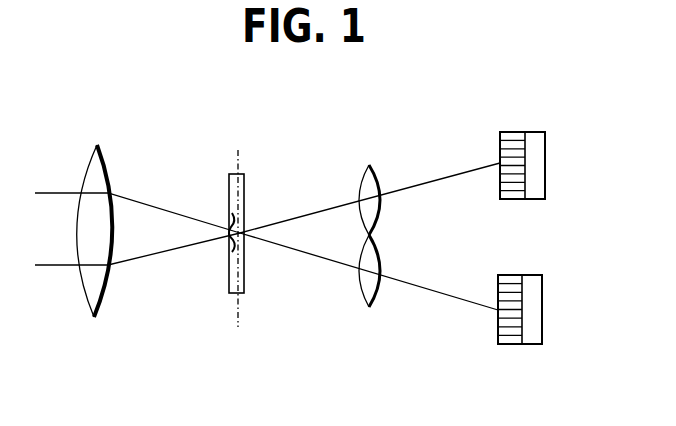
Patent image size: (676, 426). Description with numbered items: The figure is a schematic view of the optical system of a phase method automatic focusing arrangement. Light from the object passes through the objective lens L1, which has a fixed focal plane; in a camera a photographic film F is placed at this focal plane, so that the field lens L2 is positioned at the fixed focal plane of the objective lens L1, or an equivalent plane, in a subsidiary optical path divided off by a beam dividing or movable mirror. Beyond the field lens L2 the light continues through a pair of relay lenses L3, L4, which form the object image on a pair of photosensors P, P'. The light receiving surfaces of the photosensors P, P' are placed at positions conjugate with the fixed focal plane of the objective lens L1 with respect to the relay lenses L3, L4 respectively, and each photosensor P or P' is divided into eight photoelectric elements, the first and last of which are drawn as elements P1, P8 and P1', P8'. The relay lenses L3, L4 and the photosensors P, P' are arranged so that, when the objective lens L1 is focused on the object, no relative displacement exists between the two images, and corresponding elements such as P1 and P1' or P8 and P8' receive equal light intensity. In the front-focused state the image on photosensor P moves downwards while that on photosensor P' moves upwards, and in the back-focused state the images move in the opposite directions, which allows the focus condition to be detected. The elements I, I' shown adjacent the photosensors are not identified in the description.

The objective lens L1 is at (97, 145).
The field lens L2 is at (233, 173).
The photographic film F is at (237, 315).
The relay lens L3 is at (369, 165).
The relay lens L4 is at (369, 307).
The photosensor P is at (510, 132).
The photodetector substrate I is at (522, 132).
The photoelectric element P1 is at (486, 137).
The photoelectric element P8 is at (486, 182).
The photosensor P' is at (508, 337).
The second photodetector substrate I' is at (522, 337).
The photoelectric element P1' is at (484, 269).
The photoelectric element P8' is at (476, 323).